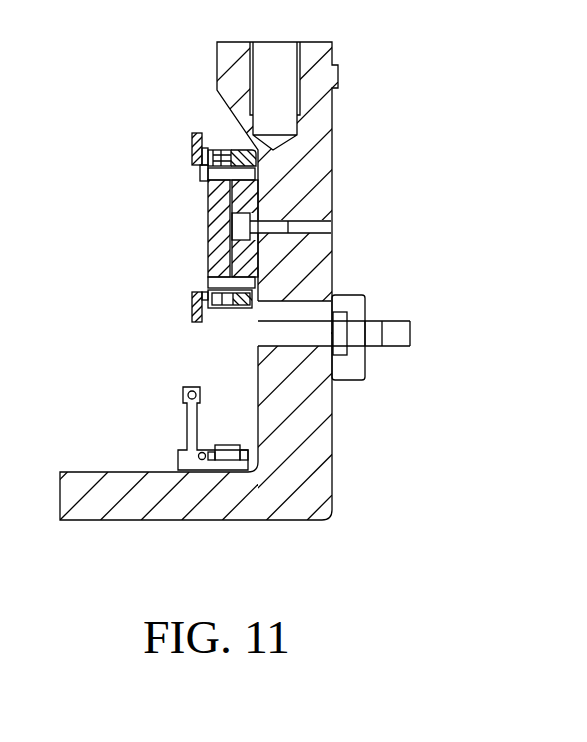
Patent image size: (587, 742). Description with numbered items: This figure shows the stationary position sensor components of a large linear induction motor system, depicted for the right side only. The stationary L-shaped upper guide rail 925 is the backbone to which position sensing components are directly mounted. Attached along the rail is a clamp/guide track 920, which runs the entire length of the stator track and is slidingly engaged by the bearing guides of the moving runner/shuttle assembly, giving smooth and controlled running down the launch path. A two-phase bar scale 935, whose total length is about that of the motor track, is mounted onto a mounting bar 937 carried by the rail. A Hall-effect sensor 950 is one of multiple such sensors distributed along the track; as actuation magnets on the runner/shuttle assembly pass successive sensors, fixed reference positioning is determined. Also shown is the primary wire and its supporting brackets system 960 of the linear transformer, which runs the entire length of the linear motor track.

The clamp/guide track 920 is at (194, 139).
The L-shaped upper guide rail 925 is at (320, 481).
The two-phase bar scale 935 is at (208, 226).
The mounting bar 937 is at (258, 208).
The Hall-effect sensor 950 is at (398, 334).
The primary wire and supporting brackets system 960 is at (183, 396).